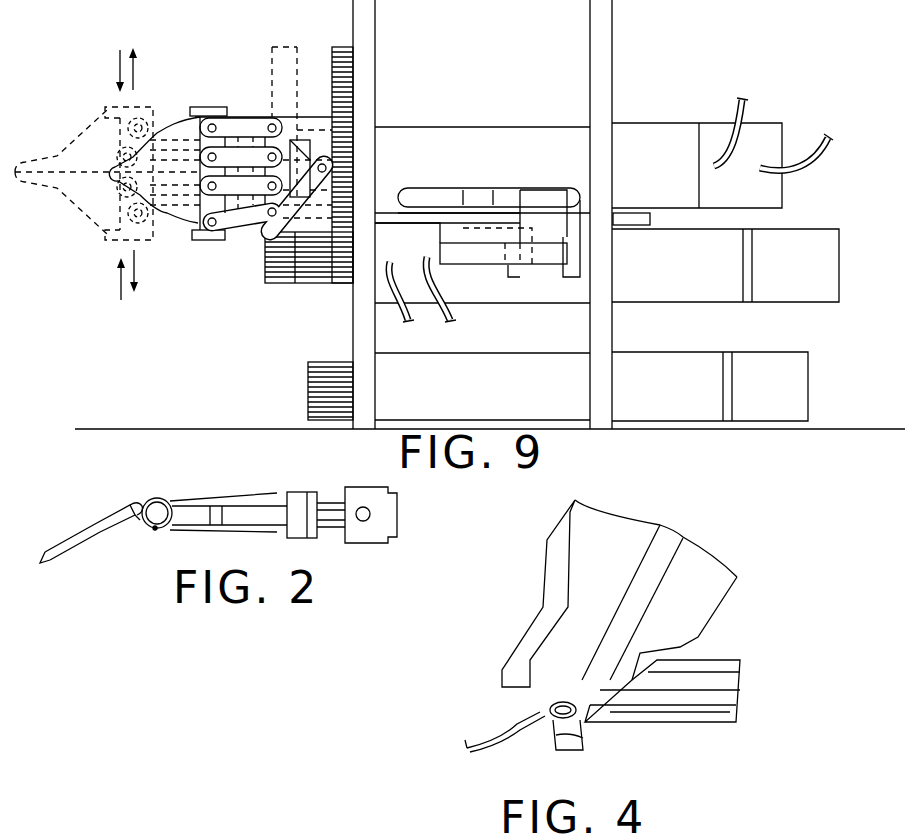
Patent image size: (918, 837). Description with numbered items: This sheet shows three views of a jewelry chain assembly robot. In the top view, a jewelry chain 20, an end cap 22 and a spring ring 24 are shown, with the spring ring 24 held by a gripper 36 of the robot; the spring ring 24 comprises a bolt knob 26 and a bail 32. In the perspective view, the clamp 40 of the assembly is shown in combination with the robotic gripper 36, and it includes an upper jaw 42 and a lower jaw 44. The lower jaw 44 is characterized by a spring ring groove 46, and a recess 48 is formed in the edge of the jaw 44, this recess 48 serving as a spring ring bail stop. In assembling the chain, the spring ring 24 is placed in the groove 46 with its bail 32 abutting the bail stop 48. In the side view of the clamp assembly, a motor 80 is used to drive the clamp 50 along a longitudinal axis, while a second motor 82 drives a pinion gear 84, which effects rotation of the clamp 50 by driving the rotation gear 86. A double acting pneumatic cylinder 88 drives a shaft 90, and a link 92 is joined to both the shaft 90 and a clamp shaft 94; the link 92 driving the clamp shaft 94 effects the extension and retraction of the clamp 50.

In FIG. 2, the jewelry chain 20 is at (72, 540).
In FIG. 2, the end cap 22 is at (110, 512).
In FIG. 2, the spring ring 24 is at (160, 498).
In FIG. 2, the bolt knob 26 is at (155, 530).
In FIG. 4, the bail 32 is at (548, 705).
In FIG. 2, the gripper 36 is at (275, 493).
In FIG. 4, the gripper 36 is at (710, 690).
In FIG. 4, the clamp 40 is at (530, 576).
In FIG. 4, the upper jaw 42 is at (617, 563).
In FIG. 4, the lower jaw 44 is at (705, 601).
In FIG. 4, the spring ring groove 46 is at (567, 740).
In FIG. 4, the recess 48 is at (553, 737).
In FIG. 9, the clamp 50 is at (168, 118).
In FIG. 9, the motor 80 is at (790, 393).
In FIG. 9, the motor 82 is at (812, 276).
In FIG. 9, the pinion gear 84 is at (313, 283).
In FIG. 9, the rotation gear 86 is at (340, 47).
In FIG. 9, the double acting pneumatic cylinder 88 is at (421, 248).
In FIG. 9, the shaft 90 is at (480, 258).
In FIG. 9, the link 92 is at (556, 225).
In FIG. 9, the clamp shaft 94 is at (510, 167).